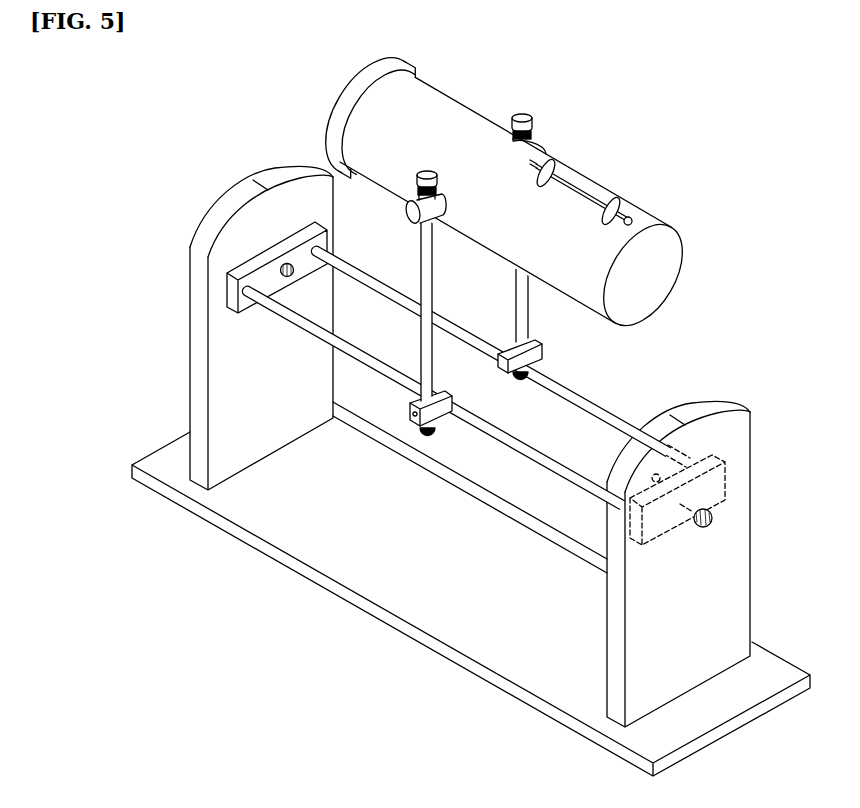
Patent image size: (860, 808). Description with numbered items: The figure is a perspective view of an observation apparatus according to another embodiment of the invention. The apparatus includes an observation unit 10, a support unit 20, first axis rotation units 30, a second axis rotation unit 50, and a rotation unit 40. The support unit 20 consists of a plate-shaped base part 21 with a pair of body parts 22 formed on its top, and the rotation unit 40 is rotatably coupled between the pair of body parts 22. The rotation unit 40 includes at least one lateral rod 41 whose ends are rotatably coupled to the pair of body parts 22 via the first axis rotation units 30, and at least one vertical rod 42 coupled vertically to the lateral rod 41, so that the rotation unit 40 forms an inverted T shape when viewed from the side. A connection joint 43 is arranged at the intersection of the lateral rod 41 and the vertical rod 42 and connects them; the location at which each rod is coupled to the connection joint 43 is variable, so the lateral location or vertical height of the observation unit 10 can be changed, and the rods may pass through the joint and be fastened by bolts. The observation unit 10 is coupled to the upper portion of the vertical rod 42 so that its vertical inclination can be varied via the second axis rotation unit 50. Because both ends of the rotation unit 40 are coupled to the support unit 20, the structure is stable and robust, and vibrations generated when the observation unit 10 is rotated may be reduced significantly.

The observation unit 10 is at (445, 118).
The support unit 20 is at (433, 471).
The base part 21 is at (155, 459).
The body parts 22 is at (196, 396).
The first axis rotation unit 30 is at (282, 269).
The rotation unit 40 is at (456, 402).
The lateral rod 41 is at (388, 376).
The vertical rod 42 is at (454, 311).
The connection joint 43 is at (430, 422).
The second axis rotation unit 50 is at (418, 210).